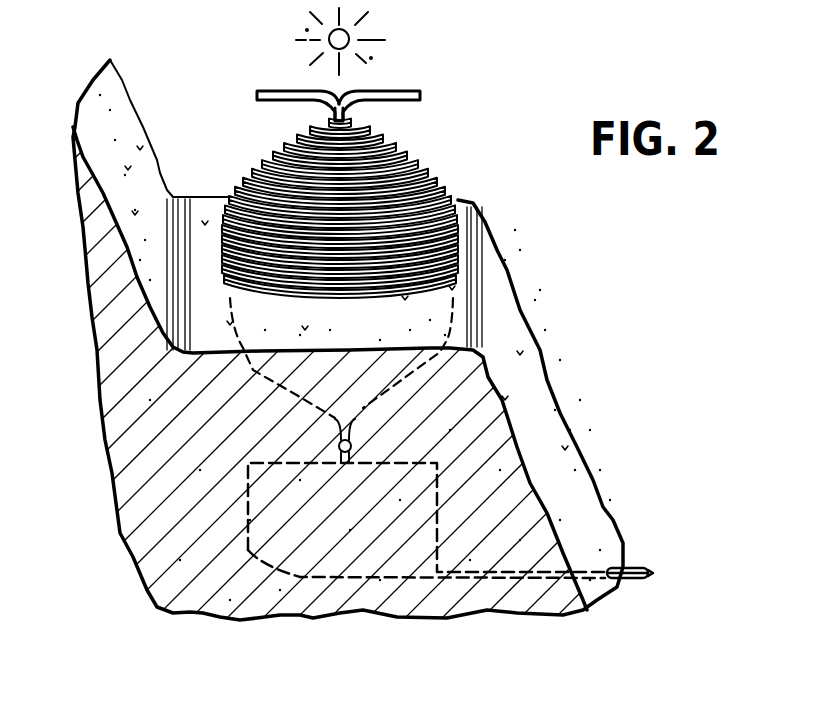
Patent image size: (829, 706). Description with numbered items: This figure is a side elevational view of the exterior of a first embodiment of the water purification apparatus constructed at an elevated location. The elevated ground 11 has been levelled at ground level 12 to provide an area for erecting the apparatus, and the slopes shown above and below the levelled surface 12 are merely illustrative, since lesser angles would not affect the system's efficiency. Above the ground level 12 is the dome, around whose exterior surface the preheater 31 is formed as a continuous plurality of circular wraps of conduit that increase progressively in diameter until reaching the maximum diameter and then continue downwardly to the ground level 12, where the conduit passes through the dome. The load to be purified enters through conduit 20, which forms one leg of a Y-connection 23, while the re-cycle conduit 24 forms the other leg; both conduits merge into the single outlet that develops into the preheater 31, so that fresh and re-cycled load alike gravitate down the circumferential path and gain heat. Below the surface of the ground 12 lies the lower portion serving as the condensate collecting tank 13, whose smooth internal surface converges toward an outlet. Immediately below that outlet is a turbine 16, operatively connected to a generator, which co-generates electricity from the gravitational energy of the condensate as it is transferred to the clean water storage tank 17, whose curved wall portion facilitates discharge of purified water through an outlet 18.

The elevated ground 11 is at (95, 309).
The ground level 12 is at (194, 283).
The condensate collecting tank 13 is at (263, 372).
The turbine 16 is at (335, 440).
The clean water storage tank 17 is at (327, 578).
The outlet pipe 18 is at (627, 570).
The conduit 20 is at (385, 90).
The Y-connection 23 is at (343, 100).
The re-cycle conduit 24 is at (274, 91).
The preheater 31 is at (419, 154).